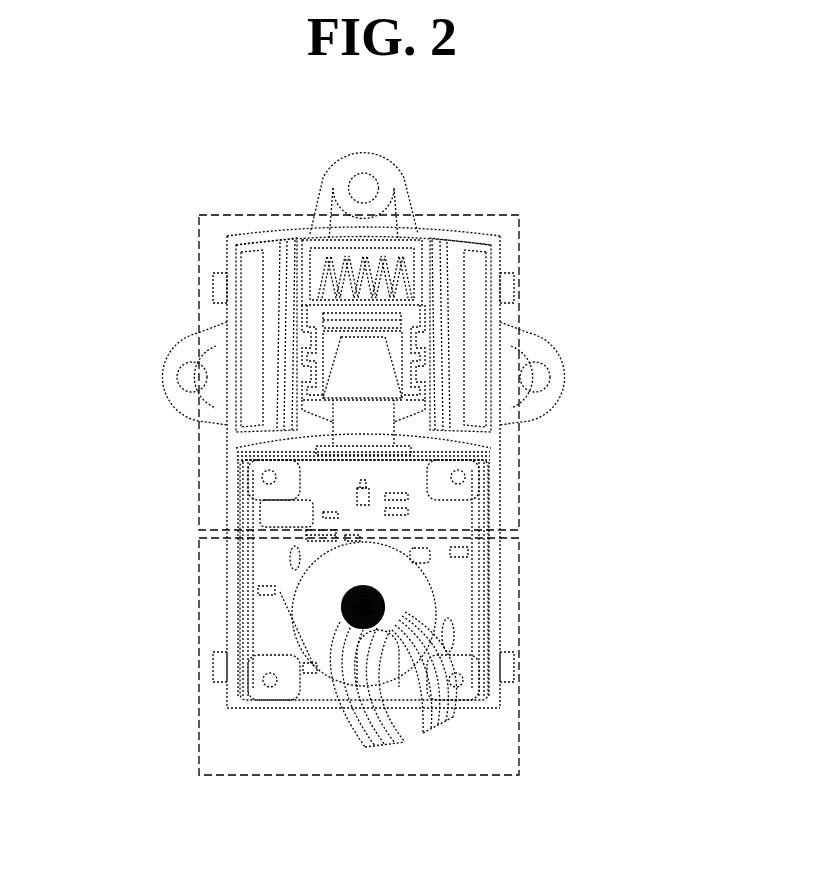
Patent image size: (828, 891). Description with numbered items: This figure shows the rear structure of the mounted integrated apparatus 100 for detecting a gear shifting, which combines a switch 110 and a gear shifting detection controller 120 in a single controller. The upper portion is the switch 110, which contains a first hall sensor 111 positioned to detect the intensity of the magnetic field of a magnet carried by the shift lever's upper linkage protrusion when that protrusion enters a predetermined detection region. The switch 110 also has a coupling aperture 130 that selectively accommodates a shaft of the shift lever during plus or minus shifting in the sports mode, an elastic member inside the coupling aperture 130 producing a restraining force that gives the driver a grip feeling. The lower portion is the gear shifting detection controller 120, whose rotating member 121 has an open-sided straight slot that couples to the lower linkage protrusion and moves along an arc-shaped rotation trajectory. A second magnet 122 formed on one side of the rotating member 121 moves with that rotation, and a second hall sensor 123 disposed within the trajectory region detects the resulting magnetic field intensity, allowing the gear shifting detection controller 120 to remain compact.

The integrated apparatus for detecting a gear shifting 100 is at (110, 123).
The switch 110 is at (520, 253).
The first hall sensor 111 is at (476, 559).
The gear shifting detection controller 120 is at (197, 570).
The rotating member 121 is at (484, 672).
The second magnet 122 is at (254, 614).
The second hall sensor 123 is at (242, 684).
The coupling aperture 130 is at (238, 347).